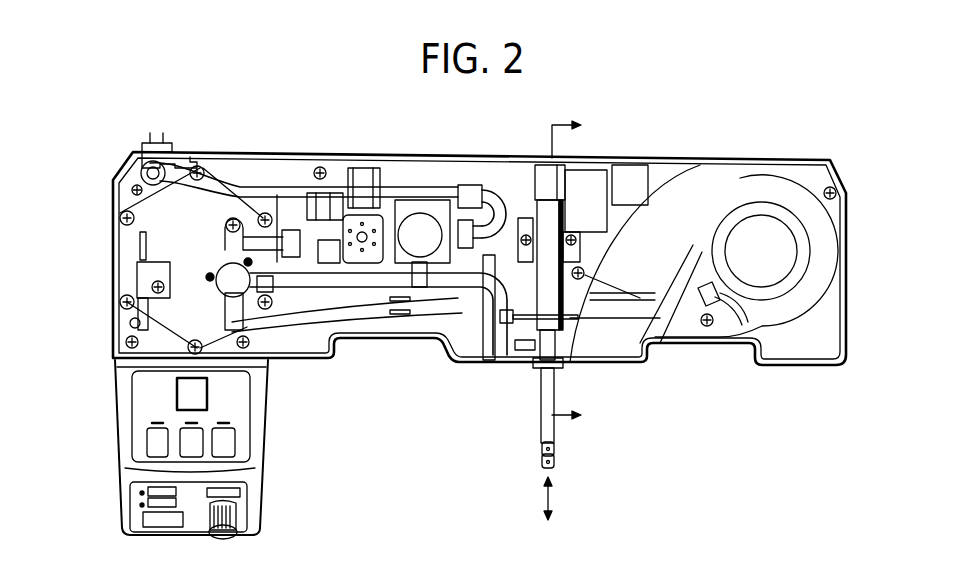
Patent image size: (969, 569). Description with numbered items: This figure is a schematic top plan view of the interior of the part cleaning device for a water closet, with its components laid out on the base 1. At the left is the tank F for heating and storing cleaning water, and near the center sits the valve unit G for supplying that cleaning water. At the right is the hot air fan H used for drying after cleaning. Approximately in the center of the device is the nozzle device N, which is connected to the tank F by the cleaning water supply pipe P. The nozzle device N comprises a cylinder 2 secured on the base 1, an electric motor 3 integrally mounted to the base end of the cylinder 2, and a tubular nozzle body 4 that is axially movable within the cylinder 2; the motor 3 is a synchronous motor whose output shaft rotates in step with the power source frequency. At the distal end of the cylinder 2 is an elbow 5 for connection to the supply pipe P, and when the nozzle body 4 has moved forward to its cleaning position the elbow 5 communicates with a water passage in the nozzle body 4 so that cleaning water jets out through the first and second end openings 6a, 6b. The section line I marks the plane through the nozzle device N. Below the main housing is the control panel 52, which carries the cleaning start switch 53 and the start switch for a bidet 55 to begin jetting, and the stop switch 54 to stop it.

The base 1 is at (490, 170).
The cylinder 2 is at (553, 283).
The electric motor 3 is at (598, 180).
The tubular nozzle body 4 is at (540, 428).
The elbow 5 is at (532, 353).
The first end opening 6a is at (555, 452).
The second end opening 6b is at (555, 468).
The control panel 52 is at (128, 465).
The cleaning start switch 53 is at (145, 442).
The stop switch 54 is at (207, 395).
The start switch for a bidet 55 is at (227, 440).
The valve unit G is at (363, 185).
The hot air fan H is at (748, 180).
The tank F is at (128, 248).
The cleaning water supply pipe P is at (448, 285).
The nozzle device N is at (517, 348).
The section line I- I is at (572, 274).